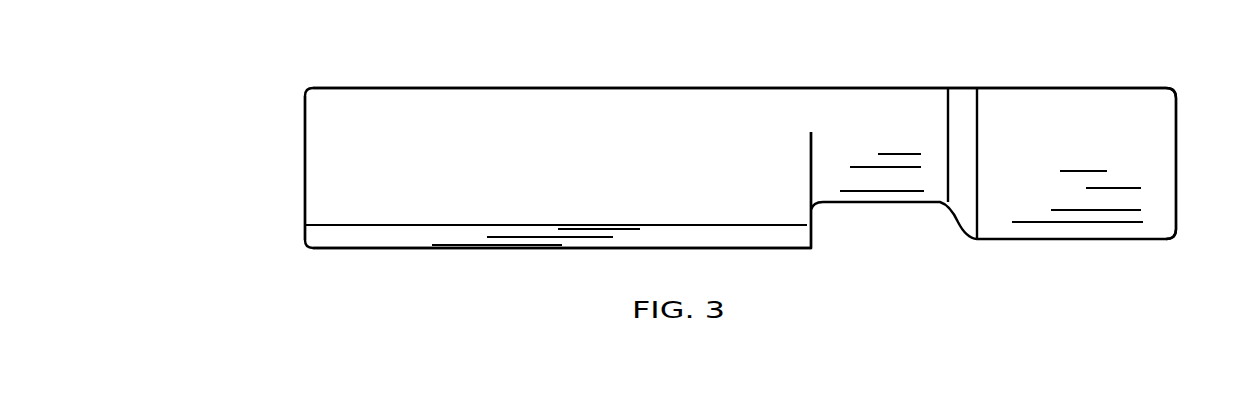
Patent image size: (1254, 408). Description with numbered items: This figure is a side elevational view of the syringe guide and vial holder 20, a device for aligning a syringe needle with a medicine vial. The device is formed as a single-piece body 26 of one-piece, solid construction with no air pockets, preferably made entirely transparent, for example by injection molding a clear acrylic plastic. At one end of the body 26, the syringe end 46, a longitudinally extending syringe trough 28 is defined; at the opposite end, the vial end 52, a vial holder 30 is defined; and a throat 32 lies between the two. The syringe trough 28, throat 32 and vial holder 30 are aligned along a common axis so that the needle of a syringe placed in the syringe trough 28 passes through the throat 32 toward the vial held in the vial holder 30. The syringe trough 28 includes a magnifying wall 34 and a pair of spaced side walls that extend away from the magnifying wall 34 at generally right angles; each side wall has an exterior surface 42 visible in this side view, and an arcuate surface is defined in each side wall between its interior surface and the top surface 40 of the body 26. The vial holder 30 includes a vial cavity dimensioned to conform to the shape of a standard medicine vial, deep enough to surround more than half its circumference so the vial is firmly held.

The syringe guide and vial holder 20 is at (291, 77).
The single-piece body 26 is at (781, 252).
The syringe trough 28 is at (535, 133).
The vial holder 30 is at (1133, 154).
The throat 32 is at (843, 113).
The magnifying wall 34 is at (412, 250).
The top surface 40 is at (666, 88).
The exterior surface 42 is at (466, 177).
The syringe end 46 is at (305, 148).
The vial end 52 is at (1176, 120).